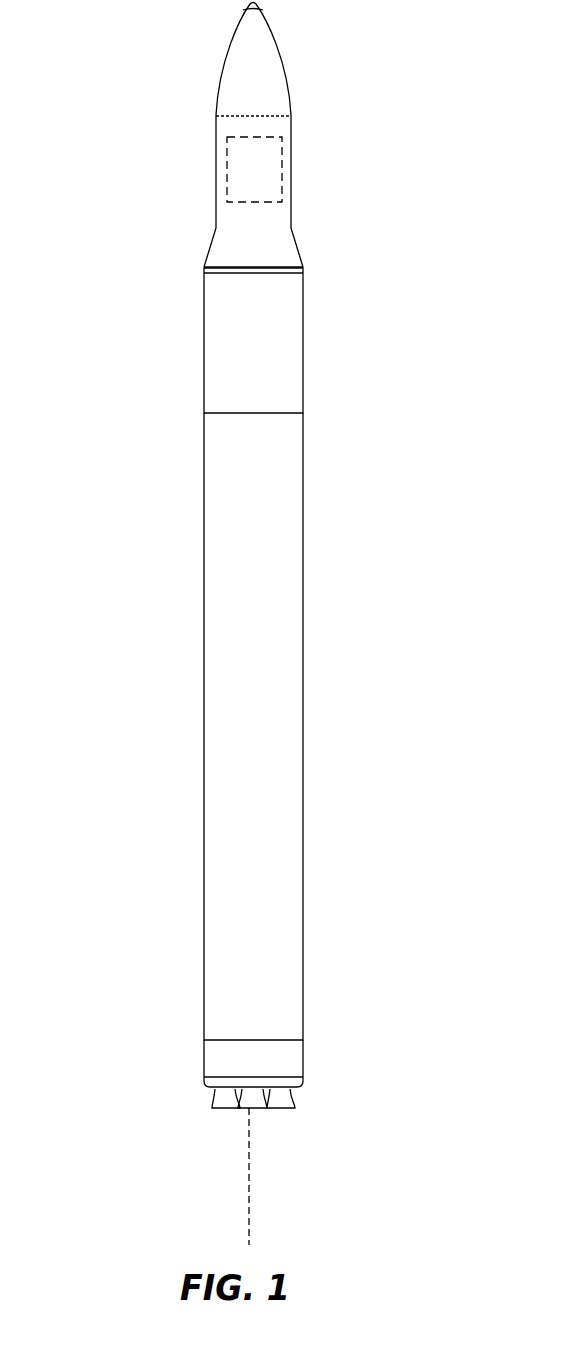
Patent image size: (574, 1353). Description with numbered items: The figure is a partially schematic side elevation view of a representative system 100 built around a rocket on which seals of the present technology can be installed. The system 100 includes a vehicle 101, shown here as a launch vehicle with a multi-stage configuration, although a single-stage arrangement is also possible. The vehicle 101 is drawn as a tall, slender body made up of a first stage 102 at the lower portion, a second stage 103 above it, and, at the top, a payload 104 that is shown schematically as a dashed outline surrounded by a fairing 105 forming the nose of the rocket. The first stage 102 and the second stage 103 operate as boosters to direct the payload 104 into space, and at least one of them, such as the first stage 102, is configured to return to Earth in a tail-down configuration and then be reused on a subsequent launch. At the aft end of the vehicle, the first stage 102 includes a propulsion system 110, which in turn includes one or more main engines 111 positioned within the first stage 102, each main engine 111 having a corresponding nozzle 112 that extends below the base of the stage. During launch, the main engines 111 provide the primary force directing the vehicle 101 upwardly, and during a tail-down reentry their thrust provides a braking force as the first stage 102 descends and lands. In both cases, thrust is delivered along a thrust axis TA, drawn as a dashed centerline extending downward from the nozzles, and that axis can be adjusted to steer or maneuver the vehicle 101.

The system 100 is at (150, 118).
The vehicle 101 is at (157, 452).
The first stage 102 is at (204, 693).
The second stage 103 is at (204, 325).
The payload 104 is at (283, 152).
The fairing 105 is at (291, 196).
The propulsion system 110 is at (333, 1037).
The main engine 111 is at (177, 1096).
The nozzle 112 is at (223, 1108).
The thrust axis TA is at (249, 1203).